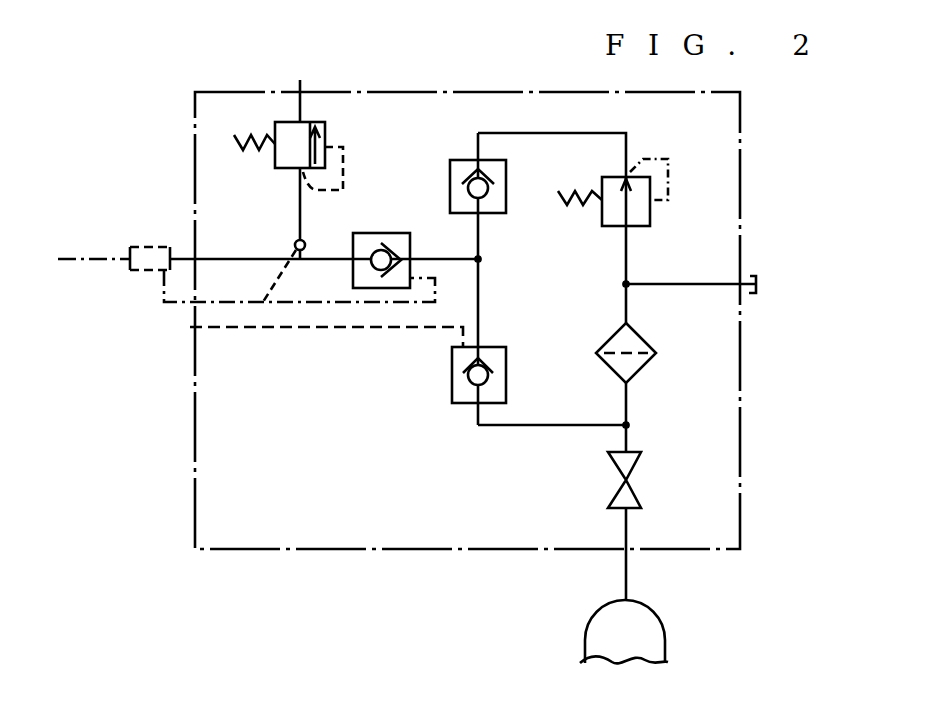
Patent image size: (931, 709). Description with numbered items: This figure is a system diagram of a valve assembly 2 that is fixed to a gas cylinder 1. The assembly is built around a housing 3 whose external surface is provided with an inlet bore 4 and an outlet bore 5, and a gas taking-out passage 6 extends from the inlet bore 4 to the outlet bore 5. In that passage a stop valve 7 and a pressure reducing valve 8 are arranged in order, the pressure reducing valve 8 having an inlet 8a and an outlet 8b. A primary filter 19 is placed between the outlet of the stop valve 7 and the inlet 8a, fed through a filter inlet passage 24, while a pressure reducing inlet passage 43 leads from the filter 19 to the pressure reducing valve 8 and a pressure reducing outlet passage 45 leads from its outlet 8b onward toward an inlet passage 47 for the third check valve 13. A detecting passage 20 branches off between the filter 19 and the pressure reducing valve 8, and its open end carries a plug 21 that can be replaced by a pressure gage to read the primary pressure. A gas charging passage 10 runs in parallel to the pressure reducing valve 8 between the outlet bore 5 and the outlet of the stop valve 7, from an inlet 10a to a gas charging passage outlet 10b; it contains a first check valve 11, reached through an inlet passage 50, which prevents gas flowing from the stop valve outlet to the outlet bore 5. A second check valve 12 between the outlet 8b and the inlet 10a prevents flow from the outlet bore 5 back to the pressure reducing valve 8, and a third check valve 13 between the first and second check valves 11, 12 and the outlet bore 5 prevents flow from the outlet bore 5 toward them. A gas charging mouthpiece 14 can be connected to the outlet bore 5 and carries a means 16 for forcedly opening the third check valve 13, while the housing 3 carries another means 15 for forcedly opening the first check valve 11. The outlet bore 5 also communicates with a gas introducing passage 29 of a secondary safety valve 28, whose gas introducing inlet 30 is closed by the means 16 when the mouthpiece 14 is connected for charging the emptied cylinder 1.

The gas cylinder 1 is at (665, 637).
The valve assembly 2 is at (764, 359).
The housing 3 is at (740, 443).
The inlet bore 4 is at (625, 549).
The outlet bore 5 is at (194, 258).
The gas taking-out passage 6 is at (626, 523).
The stop valve 7 is at (636, 468).
The pressure reducing valve 8 is at (656, 214).
The inlet of the pressure reducing valve 8a is at (625, 228).
The outlet of the pressure reducing valve 8b is at (625, 172).
The gas charging passage 10 is at (520, 430).
The inlet of the gas charging passage 10a is at (480, 263).
The gas charging passage outlet 10b is at (627, 424).
The first check valve 11 is at (452, 392).
The second check valve 12 is at (465, 160).
The third check valve 13 is at (397, 233).
The gas charging mouthpiece 14 is at (137, 274).
The forcedly valve opening means for the first check valve 15 is at (273, 328).
The forcedly valve opening means for the third check valve 16 is at (182, 304).
The primary filter 19 is at (647, 338).
The detecting passage 20 is at (665, 284).
The plug 21 is at (757, 276).
The filter inlet passage 24 is at (623, 398).
The secondary safety valve 28 is at (325, 130).
The gas introducing passage 29 is at (298, 197).
The gas introducing inlet 30 is at (296, 242).
The pressure reducing inlet passage 43 is at (623, 266).
The pressure reducing outlet passage 45 is at (627, 148).
The inlet passage for the third check valve 47 is at (479, 233).
The inlet passage for the first check valve 50 is at (479, 308).